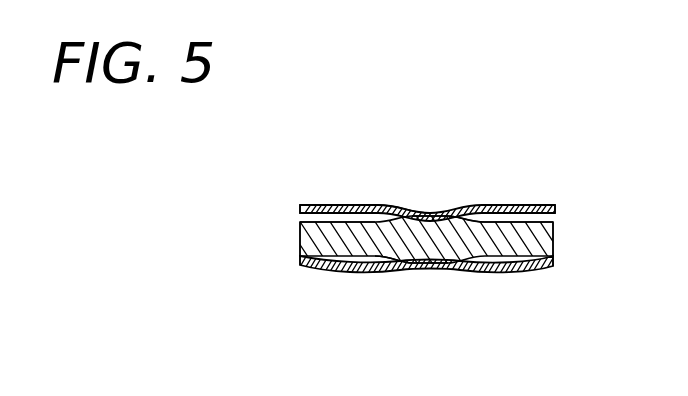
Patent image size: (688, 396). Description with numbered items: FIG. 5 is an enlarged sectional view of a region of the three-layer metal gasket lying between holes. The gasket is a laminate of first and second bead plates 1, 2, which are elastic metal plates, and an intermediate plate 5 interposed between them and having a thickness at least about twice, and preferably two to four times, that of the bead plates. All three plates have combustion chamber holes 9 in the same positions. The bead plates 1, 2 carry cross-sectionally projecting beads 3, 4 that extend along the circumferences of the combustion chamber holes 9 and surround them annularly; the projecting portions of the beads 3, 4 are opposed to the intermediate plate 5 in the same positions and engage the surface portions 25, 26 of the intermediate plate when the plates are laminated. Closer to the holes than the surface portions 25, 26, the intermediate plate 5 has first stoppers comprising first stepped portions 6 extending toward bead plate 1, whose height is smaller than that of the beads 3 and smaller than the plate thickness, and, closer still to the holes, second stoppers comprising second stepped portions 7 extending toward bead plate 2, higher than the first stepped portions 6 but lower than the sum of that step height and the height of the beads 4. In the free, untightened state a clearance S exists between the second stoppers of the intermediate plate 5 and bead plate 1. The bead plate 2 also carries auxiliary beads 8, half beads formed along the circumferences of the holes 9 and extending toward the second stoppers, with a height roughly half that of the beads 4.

The first bead plate 1 is at (536, 205).
The second bead plate 2 is at (494, 275).
The bead of first bead plate 3 is at (426, 213).
The bead of second bead plate 4 is at (423, 265).
The intermediate plate 5 is at (533, 241).
The first stepped portions 6 is at (385, 205).
The second stepped portions 7 is at (346, 214).
The auxiliary beads 8 is at (310, 270).
The combustion chamber holes 9 is at (300, 208).
The surface portion of intermediate plate 25 is at (446, 215).
The surface portion of intermediate plate 26 is at (400, 265).
The clearance S is at (303, 217).